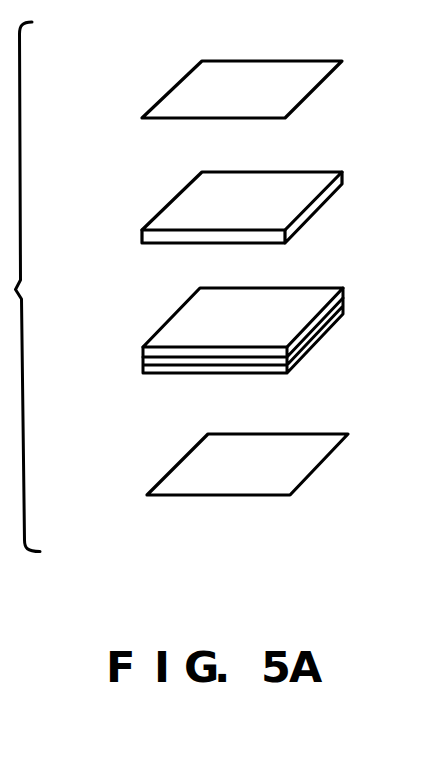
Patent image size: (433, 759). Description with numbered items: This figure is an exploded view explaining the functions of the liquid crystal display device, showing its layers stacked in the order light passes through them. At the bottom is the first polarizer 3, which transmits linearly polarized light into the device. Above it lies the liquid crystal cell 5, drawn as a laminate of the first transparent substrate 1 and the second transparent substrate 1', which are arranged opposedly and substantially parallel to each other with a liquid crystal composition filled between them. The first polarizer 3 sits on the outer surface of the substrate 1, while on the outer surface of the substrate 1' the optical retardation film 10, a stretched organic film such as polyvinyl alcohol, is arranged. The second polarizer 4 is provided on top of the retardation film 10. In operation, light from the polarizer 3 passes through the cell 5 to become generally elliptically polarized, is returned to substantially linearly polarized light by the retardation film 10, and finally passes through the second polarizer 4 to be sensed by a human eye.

The second polarizer 4 is at (272, 63).
The optical retardation film 10 is at (142, 236).
The liquid crystal cell 5 is at (192, 353).
The second transparent substrate 1' is at (211, 322).
The first transparent substrate 1 is at (212, 356).
The first polarizer 3 is at (255, 483).